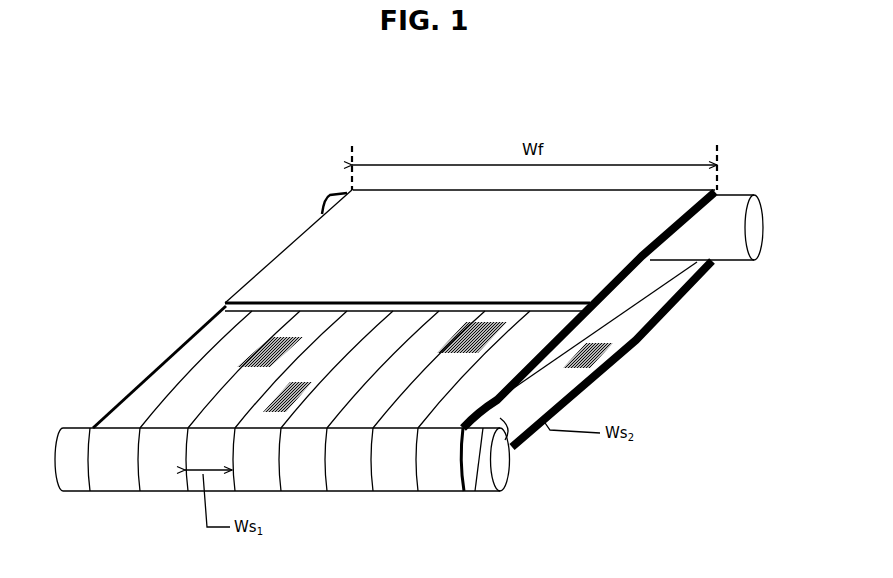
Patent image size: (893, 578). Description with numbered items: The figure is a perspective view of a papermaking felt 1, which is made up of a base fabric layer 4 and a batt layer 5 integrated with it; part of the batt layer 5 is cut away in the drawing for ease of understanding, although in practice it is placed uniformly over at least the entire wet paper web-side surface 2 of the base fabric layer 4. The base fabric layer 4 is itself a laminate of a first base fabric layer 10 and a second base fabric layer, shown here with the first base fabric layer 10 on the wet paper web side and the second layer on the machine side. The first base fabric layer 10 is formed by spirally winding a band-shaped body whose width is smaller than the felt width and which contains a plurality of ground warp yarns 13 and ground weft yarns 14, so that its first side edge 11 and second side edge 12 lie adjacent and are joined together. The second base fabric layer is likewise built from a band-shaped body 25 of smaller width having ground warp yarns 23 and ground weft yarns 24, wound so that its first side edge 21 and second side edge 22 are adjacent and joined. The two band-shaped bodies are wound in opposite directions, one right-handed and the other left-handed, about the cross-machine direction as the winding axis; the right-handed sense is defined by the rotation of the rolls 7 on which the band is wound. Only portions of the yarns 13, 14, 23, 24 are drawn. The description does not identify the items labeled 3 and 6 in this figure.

The papermaking felt 1 is at (168, 246).
The wet paper web-side surface 2 is at (237, 380).
The belt 3 is at (605, 337).
The base fabric layer 4 is at (250, 337).
The batt layer 5 is at (130, 424).
The film side edge 6 is at (282, 251).
The rolls 7 is at (320, 203).
The first base fabric layer 10 is at (440, 410).
The first side edge 11 is at (184, 465).
The second side edge 12 is at (140, 463).
The ground warp yarns 13 is at (227, 312).
The ground weft yarns 14 is at (232, 323).
The first side edge 21 is at (485, 427).
The second side edge 22 is at (503, 488).
The ground warp yarns 23 is at (610, 357).
The ground weft yarns 24 is at (600, 370).
The band-shaped body 25 is at (577, 387).